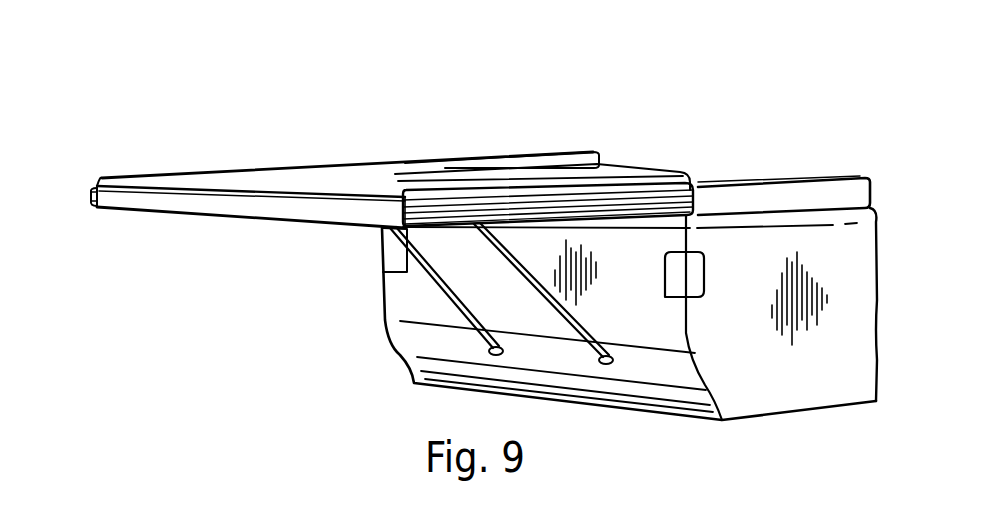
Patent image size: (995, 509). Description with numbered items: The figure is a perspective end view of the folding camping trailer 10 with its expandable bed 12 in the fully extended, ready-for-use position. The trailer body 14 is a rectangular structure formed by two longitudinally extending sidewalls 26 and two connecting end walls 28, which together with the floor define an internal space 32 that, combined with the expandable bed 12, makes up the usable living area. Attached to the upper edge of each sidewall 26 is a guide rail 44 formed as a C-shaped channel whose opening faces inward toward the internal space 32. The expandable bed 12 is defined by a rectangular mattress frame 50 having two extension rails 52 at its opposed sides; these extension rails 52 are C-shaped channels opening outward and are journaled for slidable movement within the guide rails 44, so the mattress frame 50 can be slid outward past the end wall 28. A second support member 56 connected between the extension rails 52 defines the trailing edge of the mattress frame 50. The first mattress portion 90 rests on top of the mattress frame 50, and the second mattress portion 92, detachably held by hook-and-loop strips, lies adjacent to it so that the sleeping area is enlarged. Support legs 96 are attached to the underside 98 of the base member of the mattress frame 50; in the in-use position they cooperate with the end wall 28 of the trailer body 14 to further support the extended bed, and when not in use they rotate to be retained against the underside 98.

The folding camping trailer 10 is at (430, 150).
The expandable bed 12 is at (206, 173).
The trailer body 14 is at (877, 401).
The sidewall 26 is at (843, 373).
The end wall 28 is at (653, 326).
The internal space 32 is at (715, 177).
The guide rail 44 is at (564, 160).
The mattress frame 50 is at (91, 211).
The extension rail 52 is at (606, 228).
The second support member 56 is at (248, 206).
The first mattress portion 90 is at (283, 180).
The second mattress portion 92 is at (386, 180).
The support leg 96 is at (517, 278).
The underside 98 is at (300, 222).